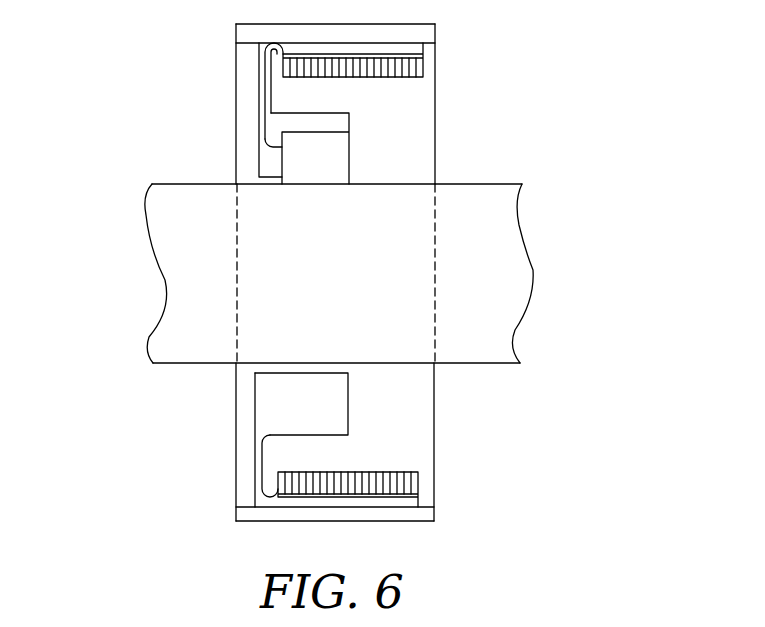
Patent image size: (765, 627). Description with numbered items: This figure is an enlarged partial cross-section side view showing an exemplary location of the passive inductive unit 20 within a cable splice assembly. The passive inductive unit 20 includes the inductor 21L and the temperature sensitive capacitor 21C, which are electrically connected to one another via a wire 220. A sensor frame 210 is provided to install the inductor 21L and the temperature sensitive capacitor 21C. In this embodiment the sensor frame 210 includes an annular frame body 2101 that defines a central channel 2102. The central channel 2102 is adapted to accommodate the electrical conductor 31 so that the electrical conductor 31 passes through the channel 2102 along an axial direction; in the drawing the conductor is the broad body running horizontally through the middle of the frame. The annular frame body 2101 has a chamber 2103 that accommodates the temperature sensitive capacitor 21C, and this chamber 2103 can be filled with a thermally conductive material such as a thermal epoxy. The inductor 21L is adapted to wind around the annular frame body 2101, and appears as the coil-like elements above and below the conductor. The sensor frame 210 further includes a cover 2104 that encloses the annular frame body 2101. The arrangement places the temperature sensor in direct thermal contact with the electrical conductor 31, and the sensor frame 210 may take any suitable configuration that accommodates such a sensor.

The passive inductive unit 20 is at (156, 124).
The sensor frame 210 is at (417, 405).
The annular frame body 2101 is at (412, 448).
The central channel 2102 is at (379, 273).
The chamber 2103 is at (272, 164).
The cover 2104 is at (435, 35).
The wire 220 is at (264, 92).
The inductor 21L is at (390, 77).
The temperature sensitive capacitor 21C is at (332, 155).
The electrical conductor 31 is at (522, 317).